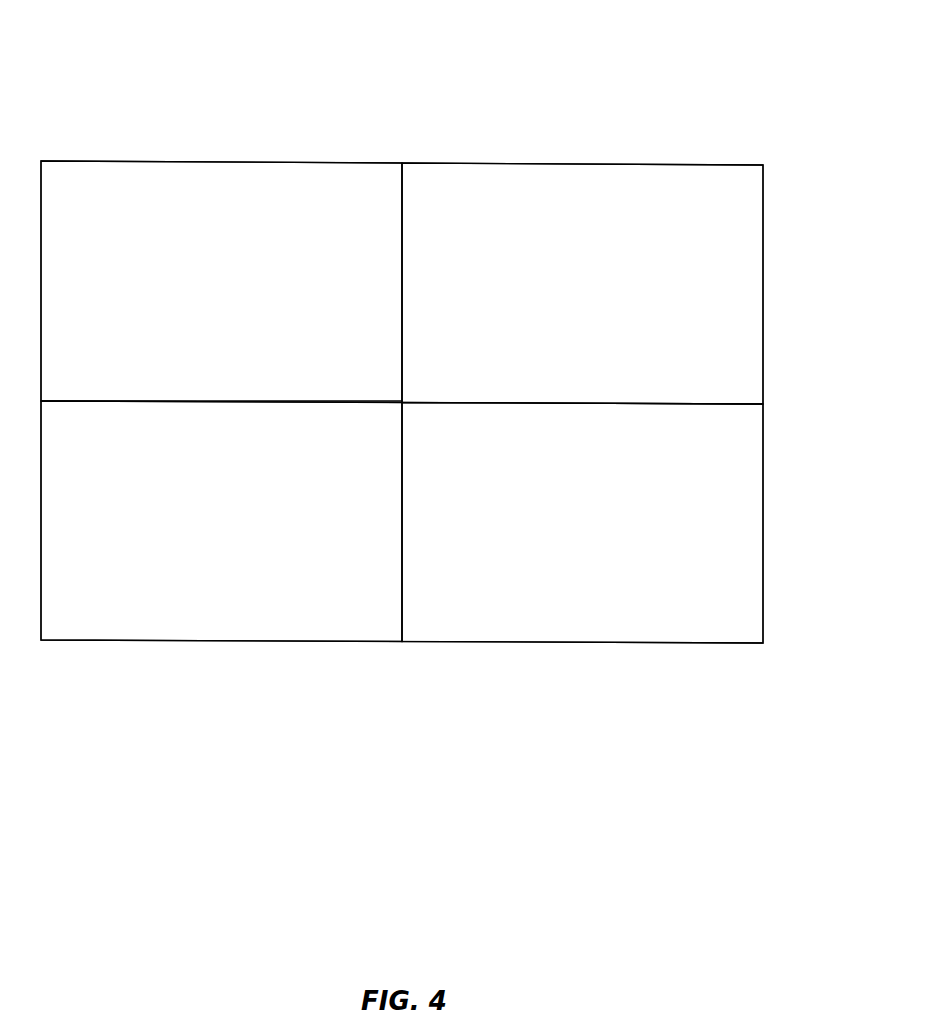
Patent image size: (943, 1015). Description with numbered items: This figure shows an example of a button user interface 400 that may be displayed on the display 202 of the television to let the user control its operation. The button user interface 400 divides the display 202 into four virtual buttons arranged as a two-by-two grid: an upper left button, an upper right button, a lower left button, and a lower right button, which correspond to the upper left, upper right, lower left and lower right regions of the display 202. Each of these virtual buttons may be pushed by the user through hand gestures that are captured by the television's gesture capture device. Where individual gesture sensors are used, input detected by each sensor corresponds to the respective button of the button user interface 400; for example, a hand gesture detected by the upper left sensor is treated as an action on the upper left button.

The button user interface 400 is at (436, 351).
The display 202 is at (763, 325).